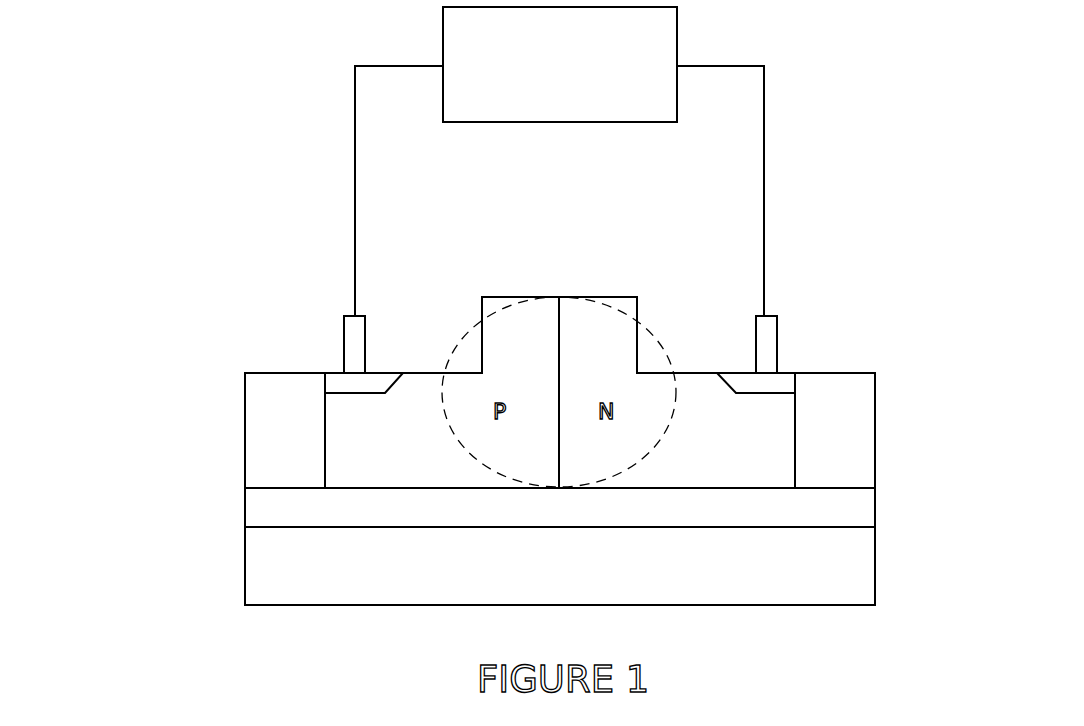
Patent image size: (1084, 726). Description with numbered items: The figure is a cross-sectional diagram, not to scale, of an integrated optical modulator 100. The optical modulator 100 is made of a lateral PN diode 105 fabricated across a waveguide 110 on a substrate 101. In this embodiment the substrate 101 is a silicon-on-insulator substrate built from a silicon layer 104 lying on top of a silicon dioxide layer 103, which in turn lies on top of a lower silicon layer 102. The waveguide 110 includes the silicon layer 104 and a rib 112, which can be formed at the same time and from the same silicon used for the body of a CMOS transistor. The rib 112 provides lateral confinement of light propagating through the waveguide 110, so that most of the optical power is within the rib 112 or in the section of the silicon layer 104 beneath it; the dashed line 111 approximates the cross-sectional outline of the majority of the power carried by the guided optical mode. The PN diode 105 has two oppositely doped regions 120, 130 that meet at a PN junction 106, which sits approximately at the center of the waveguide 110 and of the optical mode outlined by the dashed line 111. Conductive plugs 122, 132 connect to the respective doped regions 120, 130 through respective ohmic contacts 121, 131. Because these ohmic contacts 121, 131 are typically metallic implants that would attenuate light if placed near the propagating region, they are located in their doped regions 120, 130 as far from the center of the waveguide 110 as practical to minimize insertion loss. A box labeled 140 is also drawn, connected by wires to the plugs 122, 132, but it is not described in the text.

The optical modulator 100 is at (393, 258).
The substrate 101 is at (170, 401).
The silicon layer 102 is at (319, 578).
The silicon dioxide layer 103 is at (314, 519).
The silicon layer 104 is at (307, 441).
The lateral PN diode 105 is at (680, 267).
The PN junction 106 is at (559, 468).
The waveguide 110 is at (529, 257).
The dashed line 111 is at (463, 337).
The rib 112 is at (544, 347).
The doped region 120 is at (387, 461).
The ohmic contact 121 is at (337, 383).
The conductive plug 122 is at (357, 326).
The doped region 130 is at (770, 459).
The ohmic contact 131 is at (780, 383).
The conductive plug 132 is at (767, 325).
The voltage source 140 is at (581, 77).